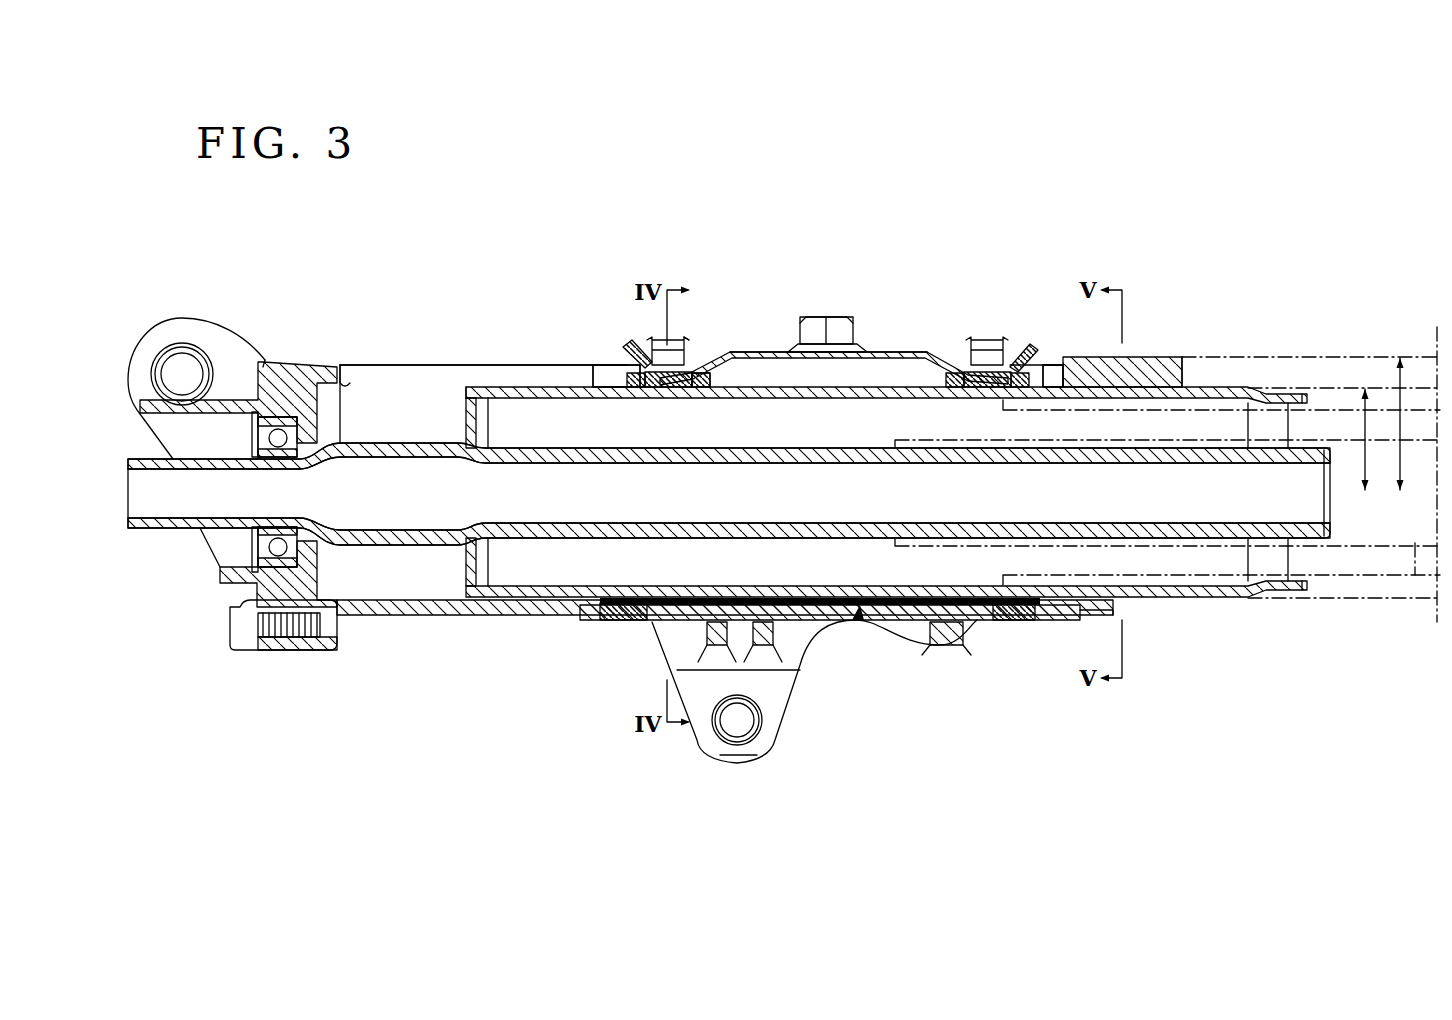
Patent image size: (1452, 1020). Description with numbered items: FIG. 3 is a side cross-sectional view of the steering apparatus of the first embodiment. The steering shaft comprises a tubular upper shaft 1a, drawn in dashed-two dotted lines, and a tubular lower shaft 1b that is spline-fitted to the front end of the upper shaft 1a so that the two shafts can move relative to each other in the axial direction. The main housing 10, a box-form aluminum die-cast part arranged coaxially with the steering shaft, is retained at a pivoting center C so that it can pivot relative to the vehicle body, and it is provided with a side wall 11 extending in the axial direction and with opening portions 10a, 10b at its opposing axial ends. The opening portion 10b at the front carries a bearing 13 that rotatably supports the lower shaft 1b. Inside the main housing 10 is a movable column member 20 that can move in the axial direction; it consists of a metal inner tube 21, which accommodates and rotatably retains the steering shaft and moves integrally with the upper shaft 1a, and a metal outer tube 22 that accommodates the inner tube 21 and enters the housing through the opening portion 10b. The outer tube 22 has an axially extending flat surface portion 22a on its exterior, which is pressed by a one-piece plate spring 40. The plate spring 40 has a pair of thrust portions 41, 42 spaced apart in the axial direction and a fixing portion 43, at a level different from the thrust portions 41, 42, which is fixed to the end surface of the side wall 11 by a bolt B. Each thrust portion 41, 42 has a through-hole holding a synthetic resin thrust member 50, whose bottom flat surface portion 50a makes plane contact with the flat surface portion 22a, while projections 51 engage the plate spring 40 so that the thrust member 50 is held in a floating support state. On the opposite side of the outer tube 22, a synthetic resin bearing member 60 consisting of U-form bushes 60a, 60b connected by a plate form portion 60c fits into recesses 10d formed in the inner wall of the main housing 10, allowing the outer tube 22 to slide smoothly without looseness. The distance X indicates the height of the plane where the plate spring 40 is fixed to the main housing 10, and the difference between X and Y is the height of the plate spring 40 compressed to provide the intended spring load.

The upper shaft 1a is at (1413, 580).
The lower shaft 1b is at (134, 533).
The main housing 10 is at (375, 620).
The opening portion 10a is at (1185, 388).
The opening portion 10b is at (347, 377).
The recesses 10d is at (608, 375).
The side wall 11 is at (378, 385).
The bearing 13 is at (240, 593).
The movable column member 20 is at (1298, 600).
The inner tube 21 is at (1358, 585).
The outer tube 22 is at (1210, 592).
The flat surface portion 22a is at (560, 387).
The plate spring 40 is at (888, 350).
The thrust portion 41 is at (1027, 347).
The thrust portion 42 is at (627, 347).
The fixing portion 43 is at (772, 352).
The thrust member 50 is at (643, 331).
The flat surface portion 50a is at (711, 385).
The projections 51 is at (688, 340).
The bearing member 60 is at (857, 622).
The bush 60a is at (1010, 623).
The bush 60b is at (613, 623).
The plate form portion 60c is at (860, 622).
The bolt B is at (817, 320).
The pivoting center C is at (185, 373).
The distance X is at (1409, 424).
The distance Y is at (1375, 430).